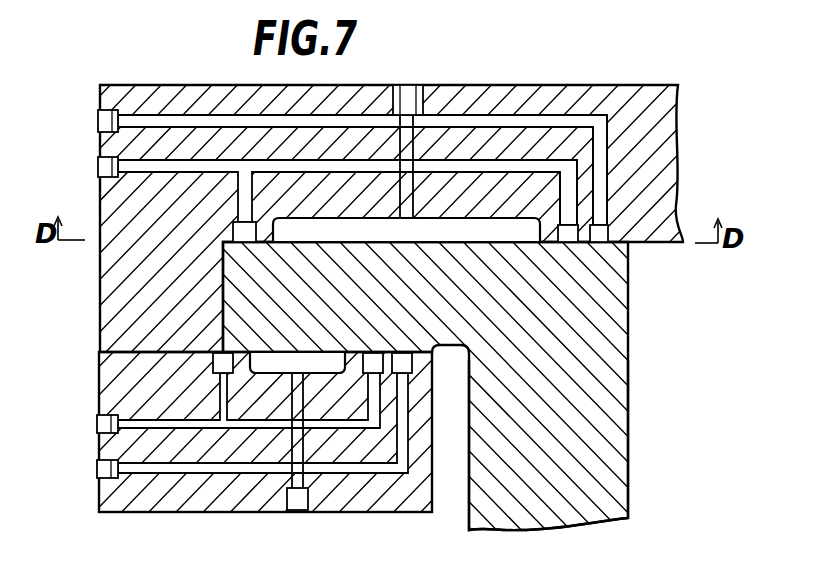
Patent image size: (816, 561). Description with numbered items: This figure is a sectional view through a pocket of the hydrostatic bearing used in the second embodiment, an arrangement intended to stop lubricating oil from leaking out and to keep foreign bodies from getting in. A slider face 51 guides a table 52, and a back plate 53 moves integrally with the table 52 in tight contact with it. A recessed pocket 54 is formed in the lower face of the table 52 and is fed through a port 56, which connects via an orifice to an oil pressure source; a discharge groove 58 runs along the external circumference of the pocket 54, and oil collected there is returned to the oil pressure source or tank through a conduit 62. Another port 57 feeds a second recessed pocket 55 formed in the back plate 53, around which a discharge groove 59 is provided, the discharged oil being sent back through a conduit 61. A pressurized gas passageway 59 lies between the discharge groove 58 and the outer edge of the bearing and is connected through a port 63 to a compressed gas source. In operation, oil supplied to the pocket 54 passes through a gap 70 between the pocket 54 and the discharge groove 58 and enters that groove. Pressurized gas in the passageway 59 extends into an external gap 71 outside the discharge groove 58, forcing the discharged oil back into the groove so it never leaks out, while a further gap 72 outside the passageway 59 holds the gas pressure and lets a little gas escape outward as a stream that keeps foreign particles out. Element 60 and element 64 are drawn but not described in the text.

The slider face 51 is at (593, 437).
The table 52 is at (657, 219).
The back plate 53 is at (370, 500).
The recessed pocket 54 is at (628, 378).
The recessed pocket 55 is at (262, 355).
The port 56 is at (410, 85).
The port 57 is at (298, 513).
The discharge groove 58 is at (233, 233).
The discharge groove 59 is at (213, 363).
The nozzle 60 is at (400, 362).
The conduit 61 is at (97, 424).
The conduit 62 is at (100, 165).
The port 63 is at (100, 121).
The supply port 64 is at (97, 468).
The gap 70 is at (255, 244).
The external gap 71 is at (600, 206).
The gap 72 is at (612, 216).